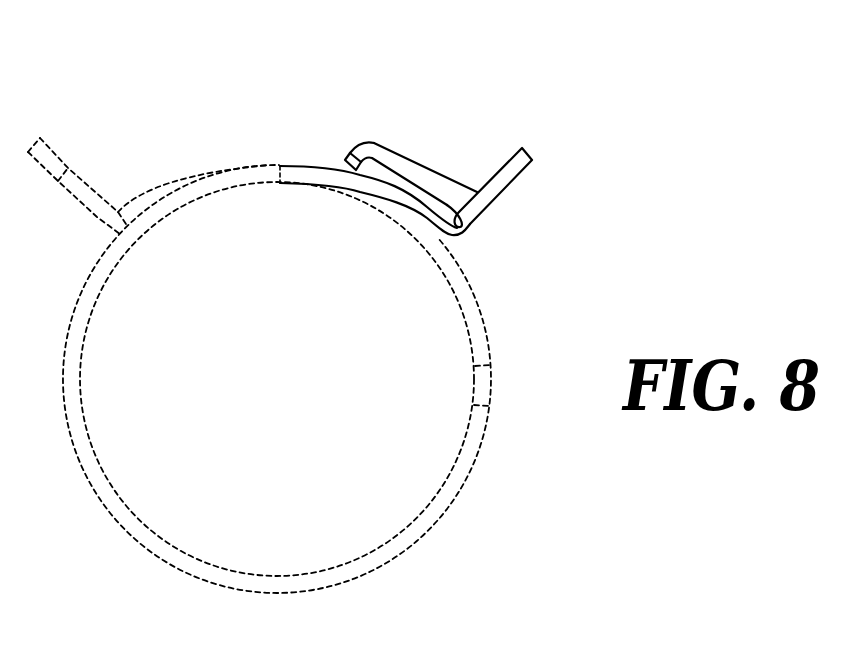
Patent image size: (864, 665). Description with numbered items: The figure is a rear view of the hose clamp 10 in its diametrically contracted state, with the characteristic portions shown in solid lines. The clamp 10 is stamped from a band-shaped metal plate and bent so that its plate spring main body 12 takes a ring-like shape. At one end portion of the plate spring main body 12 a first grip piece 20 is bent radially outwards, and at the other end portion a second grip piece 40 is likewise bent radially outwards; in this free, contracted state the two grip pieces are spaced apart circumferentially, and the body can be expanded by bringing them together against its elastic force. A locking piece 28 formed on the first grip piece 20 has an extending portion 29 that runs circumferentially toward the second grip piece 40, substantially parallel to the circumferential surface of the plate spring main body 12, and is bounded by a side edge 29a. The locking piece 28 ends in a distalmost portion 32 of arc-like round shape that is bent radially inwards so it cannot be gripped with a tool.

The clamp 10 is at (286, 148).
The plate spring main body 12 is at (398, 200).
The first grip piece 20 is at (503, 142).
The locking piece 28 is at (378, 133).
The extending portion 29 is at (409, 152).
The side edge 29a is at (428, 177).
The distalmost portion 32 is at (345, 158).
The second grip piece 40 is at (88, 170).